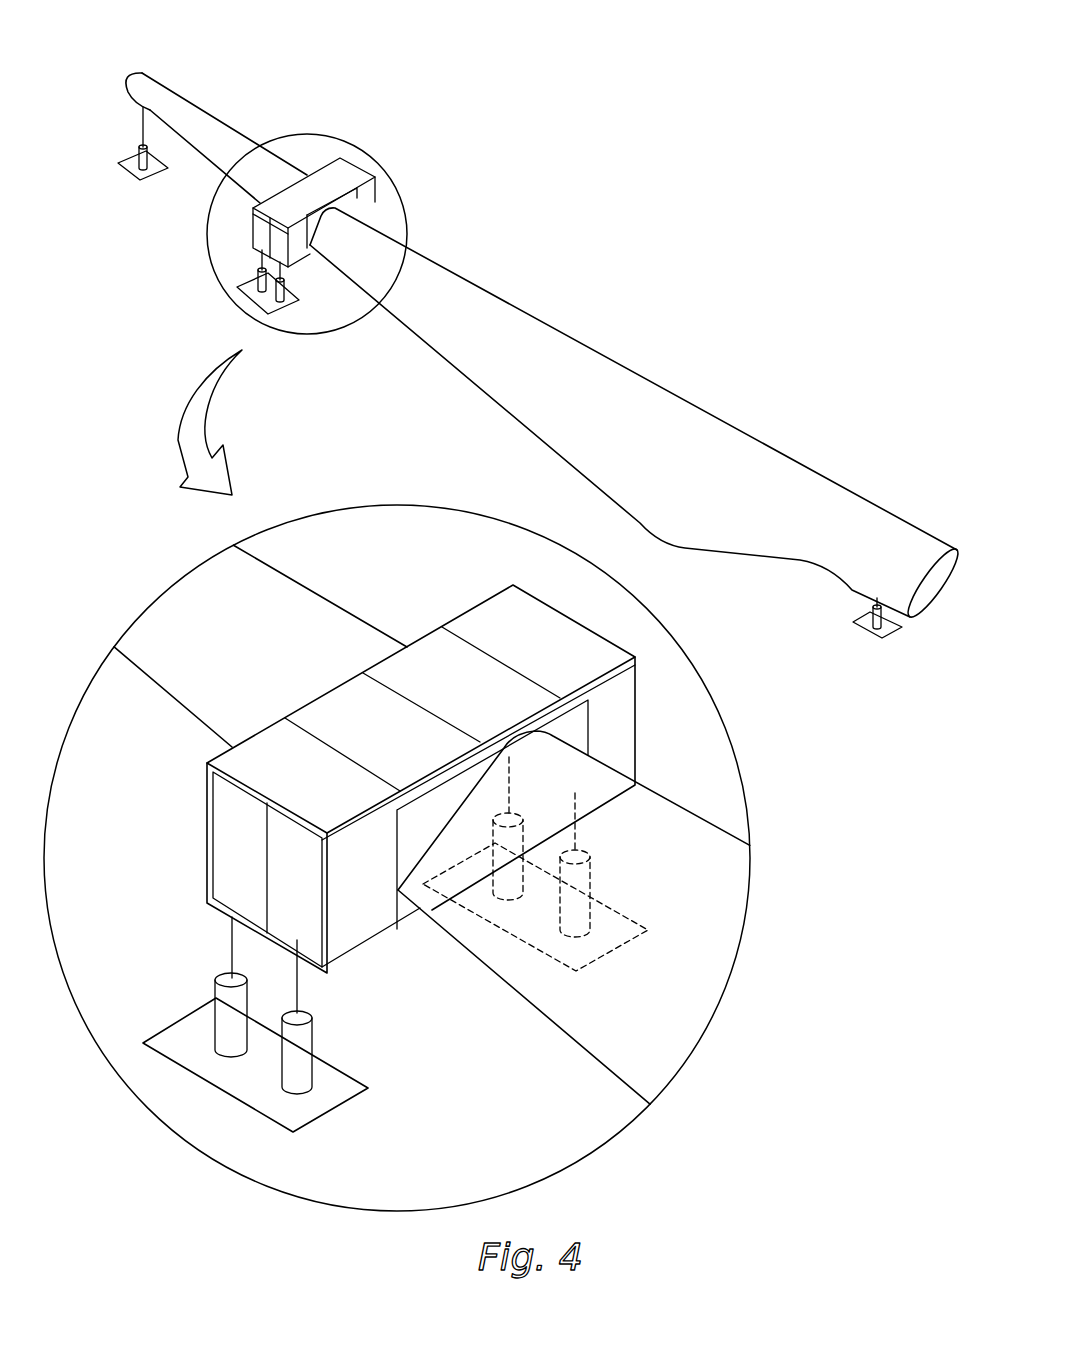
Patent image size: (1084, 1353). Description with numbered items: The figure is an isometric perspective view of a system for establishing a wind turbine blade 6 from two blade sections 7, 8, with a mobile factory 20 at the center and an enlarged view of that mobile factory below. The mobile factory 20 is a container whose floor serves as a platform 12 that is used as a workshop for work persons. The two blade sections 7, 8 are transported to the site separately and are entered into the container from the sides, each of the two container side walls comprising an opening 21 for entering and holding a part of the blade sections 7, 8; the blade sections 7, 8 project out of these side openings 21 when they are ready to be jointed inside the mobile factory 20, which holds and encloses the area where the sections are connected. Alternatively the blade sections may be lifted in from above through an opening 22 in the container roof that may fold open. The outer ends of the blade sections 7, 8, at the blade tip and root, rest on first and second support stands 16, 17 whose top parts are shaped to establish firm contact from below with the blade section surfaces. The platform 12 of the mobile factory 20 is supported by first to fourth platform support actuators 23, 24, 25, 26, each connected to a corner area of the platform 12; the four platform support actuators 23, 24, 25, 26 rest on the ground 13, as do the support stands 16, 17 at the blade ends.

The wind turbine blade 6 is at (703, 143).
The blade section 7 is at (198, 106).
The blade section 8 is at (633, 362).
The platform 12 is at (220, 913).
The ground 13 is at (130, 177).
The first support stand 16 is at (143, 130).
The second support stand 17 is at (877, 608).
The mobile factory 20 is at (338, 158).
The opening 21 is at (356, 173).
The opening 22 is at (532, 635).
The first platform support actuator 23 is at (230, 960).
The second platform support actuator 24 is at (297, 990).
The third platform support actuator 25 is at (510, 790).
The fourth platform support actuator 26 is at (577, 832).